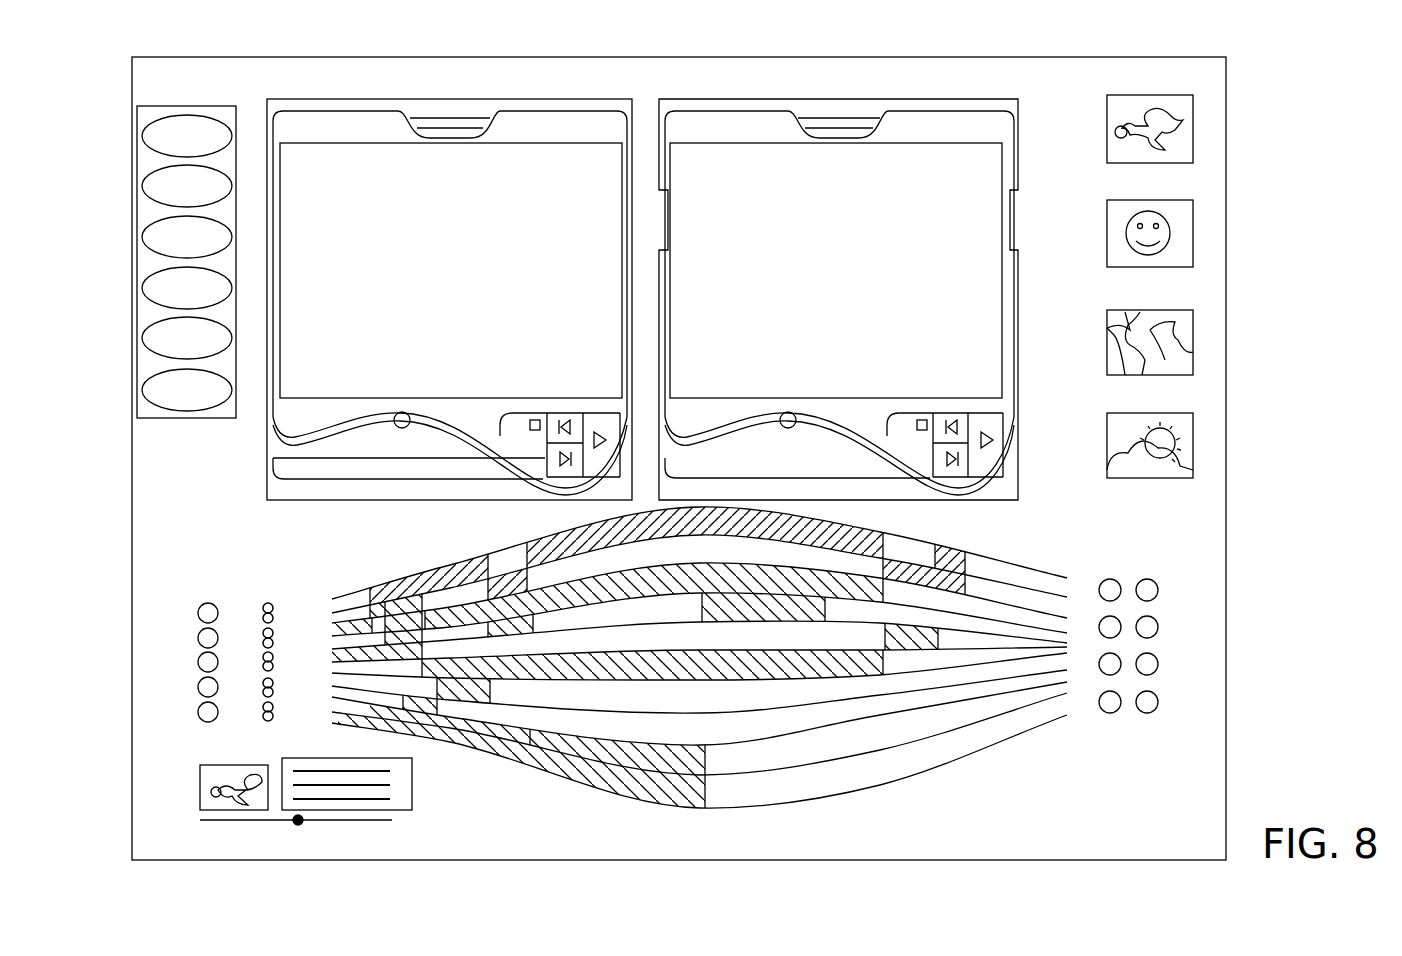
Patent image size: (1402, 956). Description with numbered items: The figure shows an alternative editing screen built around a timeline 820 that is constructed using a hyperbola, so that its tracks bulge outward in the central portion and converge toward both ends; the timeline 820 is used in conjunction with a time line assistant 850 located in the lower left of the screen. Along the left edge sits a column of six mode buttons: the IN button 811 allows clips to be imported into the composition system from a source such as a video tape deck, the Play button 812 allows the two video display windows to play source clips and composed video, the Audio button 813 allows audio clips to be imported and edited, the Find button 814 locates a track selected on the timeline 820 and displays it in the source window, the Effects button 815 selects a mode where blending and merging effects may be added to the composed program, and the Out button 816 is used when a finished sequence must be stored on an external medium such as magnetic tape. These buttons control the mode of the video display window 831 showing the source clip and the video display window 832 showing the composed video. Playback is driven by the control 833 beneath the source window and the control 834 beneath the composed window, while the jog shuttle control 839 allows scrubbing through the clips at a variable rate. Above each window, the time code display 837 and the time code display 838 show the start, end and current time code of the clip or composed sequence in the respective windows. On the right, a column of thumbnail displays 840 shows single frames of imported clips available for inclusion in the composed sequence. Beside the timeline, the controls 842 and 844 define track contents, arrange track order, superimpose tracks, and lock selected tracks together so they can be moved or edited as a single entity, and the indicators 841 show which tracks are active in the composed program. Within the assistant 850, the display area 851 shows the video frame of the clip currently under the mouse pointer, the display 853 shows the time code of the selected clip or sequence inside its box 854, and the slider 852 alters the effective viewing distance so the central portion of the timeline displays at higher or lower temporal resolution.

The IN button 811 is at (143, 133).
The Play button 812 is at (143, 183).
The Audio button 813 is at (143, 234).
The Find button 814 is at (143, 285).
The Effects button 815 is at (143, 335).
The Out button 816 is at (143, 387).
The timeline 820 is at (967, 748).
The video display window 831 is at (457, 283).
The video display window 832 is at (850, 283).
The control 833 is at (557, 480).
The control 834 is at (963, 480).
The time code display 837 is at (457, 113).
The time code display 838 is at (832, 113).
The jog shuttle control 839 is at (395, 423).
The thumbnail display 840 is at (1106, 128).
The indicator 841 is at (273, 602).
The control 842 is at (212, 604).
The control 844 is at (1158, 704).
The time line assistant 850 is at (195, 800).
The display area 851 is at (200, 765).
The slider 852 is at (295, 823).
The display 853 is at (393, 770).
The clip property box 854 is at (393, 797).